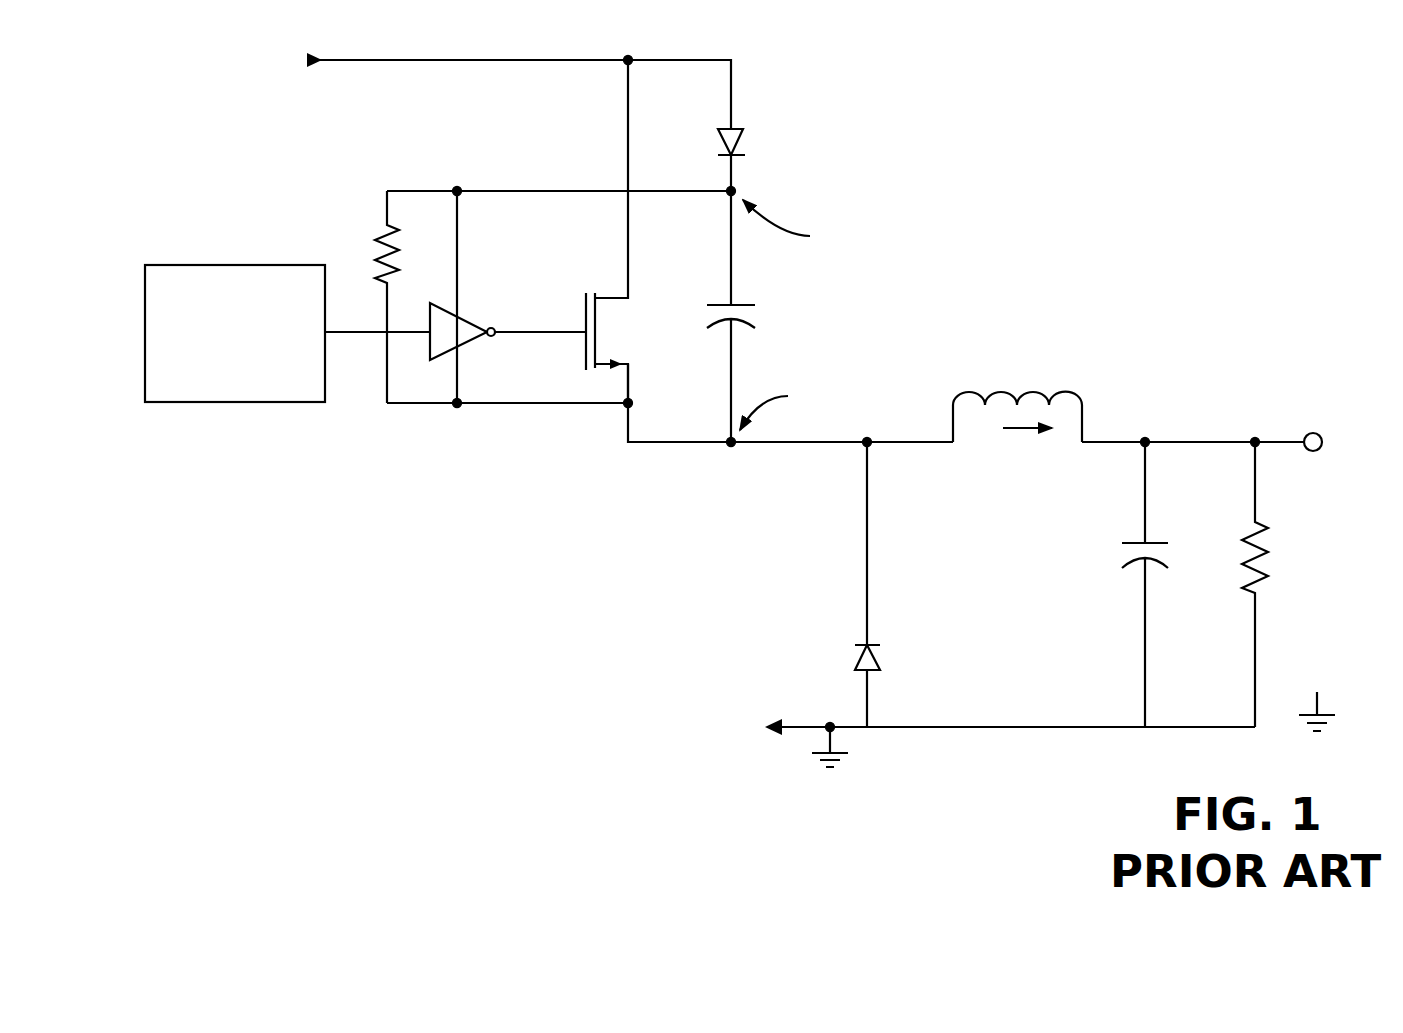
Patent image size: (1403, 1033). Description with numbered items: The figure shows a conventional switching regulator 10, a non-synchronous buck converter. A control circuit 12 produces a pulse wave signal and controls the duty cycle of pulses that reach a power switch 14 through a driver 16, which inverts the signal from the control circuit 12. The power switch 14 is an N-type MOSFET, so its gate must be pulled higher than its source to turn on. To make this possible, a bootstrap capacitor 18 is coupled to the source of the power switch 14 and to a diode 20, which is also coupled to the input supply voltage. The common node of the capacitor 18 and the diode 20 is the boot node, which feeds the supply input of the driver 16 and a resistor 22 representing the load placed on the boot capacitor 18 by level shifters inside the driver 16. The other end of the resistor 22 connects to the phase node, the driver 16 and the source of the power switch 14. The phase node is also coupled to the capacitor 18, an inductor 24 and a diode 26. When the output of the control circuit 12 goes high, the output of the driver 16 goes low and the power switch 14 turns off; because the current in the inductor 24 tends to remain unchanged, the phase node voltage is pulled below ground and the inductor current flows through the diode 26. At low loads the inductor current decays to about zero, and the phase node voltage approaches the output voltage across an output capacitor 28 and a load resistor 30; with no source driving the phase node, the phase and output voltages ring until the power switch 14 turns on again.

The switching regulator 10 is at (1092, 115).
The control circuit 12 is at (207, 265).
The power switch 14 is at (602, 340).
The driver 16 is at (492, 285).
The capacitor 18 is at (765, 287).
The diode 20 is at (767, 128).
The resistor 22 is at (355, 230).
The inductor 24 is at (1007, 375).
The diode 26 is at (890, 633).
The capacitor 28 is at (1110, 532).
The load resistor 30 is at (1232, 532).